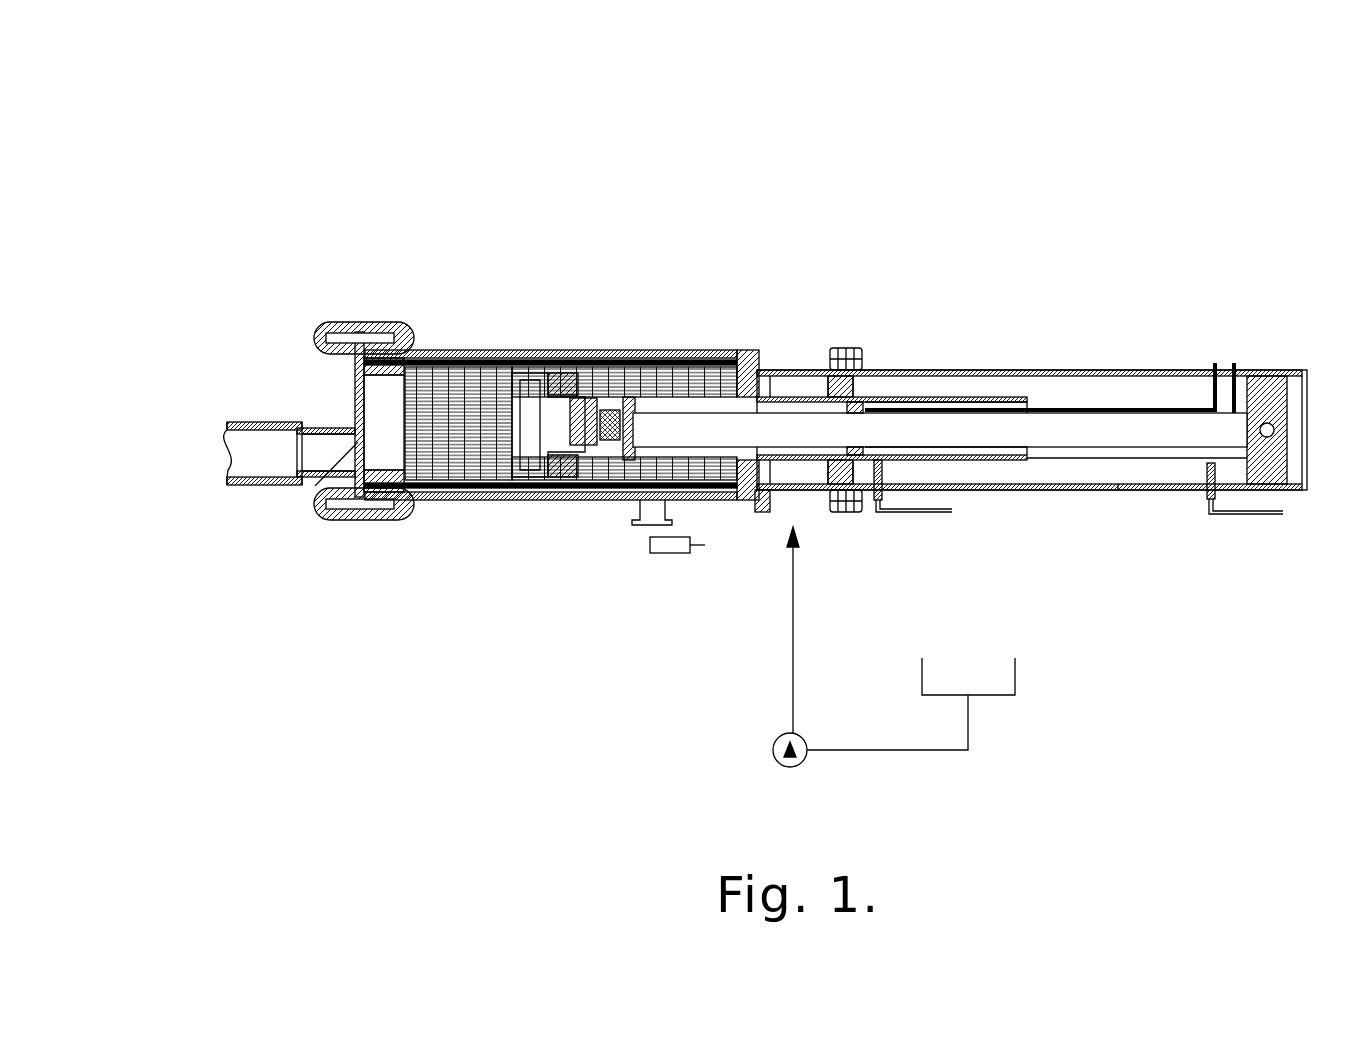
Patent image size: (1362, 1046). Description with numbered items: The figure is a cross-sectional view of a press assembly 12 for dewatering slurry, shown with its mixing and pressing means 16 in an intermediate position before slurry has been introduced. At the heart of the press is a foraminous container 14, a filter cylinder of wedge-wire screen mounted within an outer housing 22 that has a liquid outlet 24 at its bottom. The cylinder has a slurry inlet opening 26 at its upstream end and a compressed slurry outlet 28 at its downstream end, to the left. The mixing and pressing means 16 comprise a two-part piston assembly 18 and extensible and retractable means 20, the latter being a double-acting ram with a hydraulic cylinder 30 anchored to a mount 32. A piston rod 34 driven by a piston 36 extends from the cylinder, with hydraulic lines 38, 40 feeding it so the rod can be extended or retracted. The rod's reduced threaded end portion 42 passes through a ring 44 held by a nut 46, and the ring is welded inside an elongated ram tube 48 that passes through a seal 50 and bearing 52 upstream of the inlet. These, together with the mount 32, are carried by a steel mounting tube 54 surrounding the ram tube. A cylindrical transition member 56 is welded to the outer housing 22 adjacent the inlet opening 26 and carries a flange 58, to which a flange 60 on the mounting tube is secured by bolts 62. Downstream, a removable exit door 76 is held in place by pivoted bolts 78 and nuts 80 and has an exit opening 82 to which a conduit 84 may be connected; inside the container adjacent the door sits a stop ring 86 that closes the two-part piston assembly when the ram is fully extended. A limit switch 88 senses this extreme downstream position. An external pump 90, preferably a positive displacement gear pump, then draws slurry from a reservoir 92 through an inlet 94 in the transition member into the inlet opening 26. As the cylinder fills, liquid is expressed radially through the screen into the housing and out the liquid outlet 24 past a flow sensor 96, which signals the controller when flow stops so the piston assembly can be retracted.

The press assembly 12 is at (256, 238).
The foraminous container 14 is at (478, 450).
The mixing and pressing means 16 is at (1130, 360).
The two-part piston assembly 18 is at (538, 468).
The extensible and retractable means 20 is at (1068, 458).
The outer housing 22 is at (475, 350).
The liquid outlet 24 is at (632, 510).
The slurry inlet opening 26 is at (745, 385).
The compressed slurry outlet 28 is at (322, 505).
The hydraulic cylinder 30 is at (1118, 490).
The mount 32 is at (1262, 482).
The piston rod 34 is at (807, 430).
The piston 36 is at (1066, 428).
The hydraulic line 38 is at (1237, 362).
The hydraulic line 40 is at (1217, 362).
The threaded end portion 42 is at (613, 418).
The ring 44 is at (623, 412).
The nut 46 is at (640, 445).
The ram tube 48 is at (1007, 408).
The seal 50 is at (816, 366).
The bearing 52 is at (858, 405).
The mounting tube 54 is at (955, 368).
The transition member 56 is at (796, 368).
The flange 58 is at (840, 350).
The flange 60 is at (862, 352).
The bolts 62 is at (866, 364).
The exit door 76 is at (352, 392).
The pivoted bolts 78 is at (362, 360).
The nuts 80 is at (325, 325).
The exit opening 82 is at (327, 430).
The conduit 84 is at (262, 488).
The stop ring 86 is at (398, 362).
The limit switch 88 is at (928, 512).
The external pump 90 is at (800, 765).
The reservoir 92 is at (1018, 680).
The inlet 94 is at (765, 515).
The flow sensor 96 is at (668, 555).